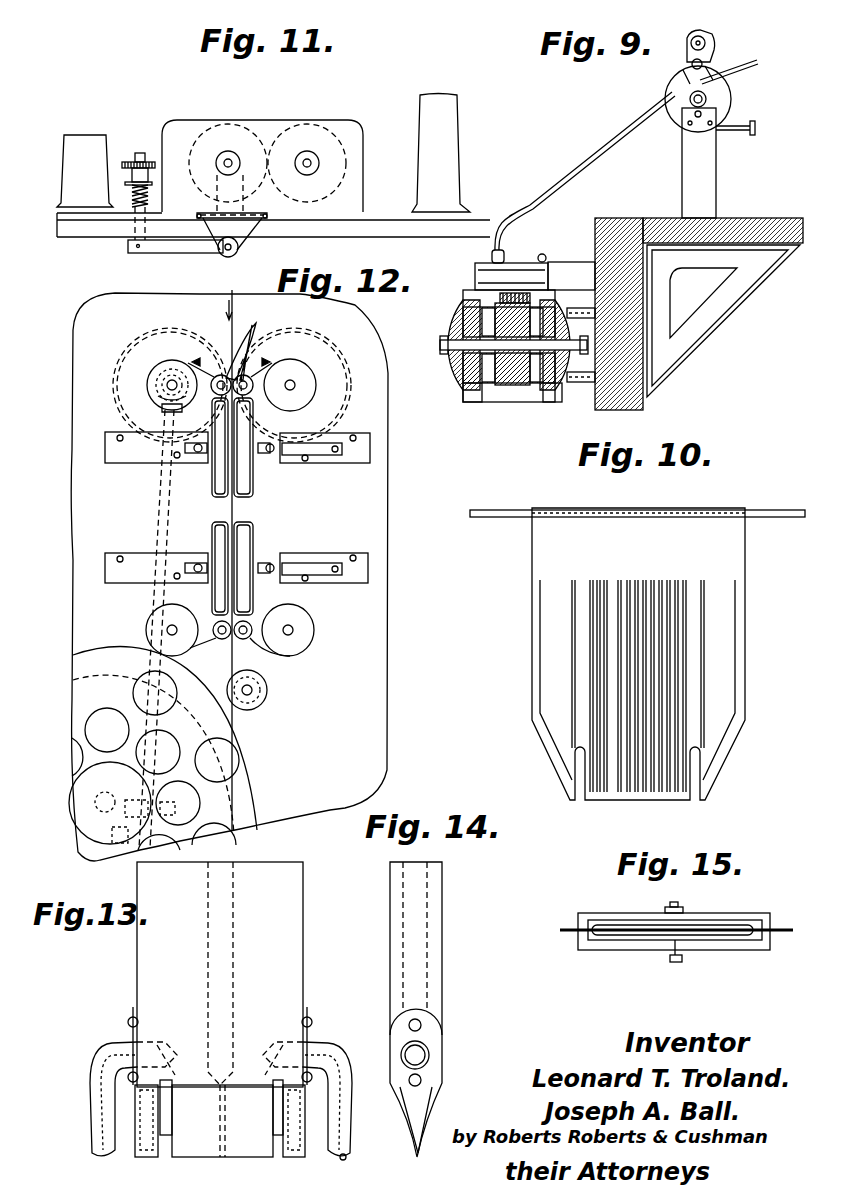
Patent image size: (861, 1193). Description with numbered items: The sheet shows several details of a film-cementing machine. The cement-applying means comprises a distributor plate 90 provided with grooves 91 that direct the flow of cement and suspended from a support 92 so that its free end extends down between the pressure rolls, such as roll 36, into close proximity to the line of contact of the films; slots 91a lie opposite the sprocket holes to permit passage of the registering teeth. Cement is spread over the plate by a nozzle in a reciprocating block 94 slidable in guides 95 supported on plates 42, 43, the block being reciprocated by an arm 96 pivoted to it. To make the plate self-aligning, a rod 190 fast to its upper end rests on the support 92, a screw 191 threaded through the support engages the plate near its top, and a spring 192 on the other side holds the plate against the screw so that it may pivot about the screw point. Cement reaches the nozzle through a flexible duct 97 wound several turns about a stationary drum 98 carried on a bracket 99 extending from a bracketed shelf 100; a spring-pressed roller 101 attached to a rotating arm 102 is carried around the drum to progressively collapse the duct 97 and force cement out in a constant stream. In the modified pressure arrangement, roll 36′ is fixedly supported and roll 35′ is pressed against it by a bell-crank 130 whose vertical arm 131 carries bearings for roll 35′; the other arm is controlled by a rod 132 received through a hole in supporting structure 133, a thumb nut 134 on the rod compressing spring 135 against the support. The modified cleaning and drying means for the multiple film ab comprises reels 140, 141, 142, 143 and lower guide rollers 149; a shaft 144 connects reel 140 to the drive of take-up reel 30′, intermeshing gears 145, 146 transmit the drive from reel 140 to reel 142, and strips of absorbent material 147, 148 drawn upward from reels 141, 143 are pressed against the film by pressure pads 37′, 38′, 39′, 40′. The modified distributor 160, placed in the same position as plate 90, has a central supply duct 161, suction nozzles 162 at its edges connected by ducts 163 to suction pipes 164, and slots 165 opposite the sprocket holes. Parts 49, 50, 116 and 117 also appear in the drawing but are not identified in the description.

In FIG. 12, the take-up reel 30′ is at (257, 797).
In FIG. 11, the pressure roll 35′ is at (238, 122).
In FIG. 11, the pressure roll 36′ is at (327, 130).
In FIG. 9, the pressure roll 36 is at (512, 385).
In FIG. 12, the pressure pad 37′ is at (217, 480).
In FIG. 12, the pressure pad 38′ is at (253, 487).
In FIG. 12, the pressure pad 39′ is at (215, 596).
In FIG. 12, the pressure pad 40′ is at (250, 547).
In FIG. 9, the plate 42 is at (462, 388).
In FIG. 9, the plate 43 is at (548, 388).
In FIG. 9, the motor shaft 49 is at (455, 330).
In FIG. 9, the terminal 50 is at (580, 312).
In FIG. 9, the distributor plate 90 is at (500, 298).
In FIG. 10, the distributor plate 90 is at (725, 564).
In FIG. 15, the distributor plate 90 is at (640, 931).
In FIG. 10, the grooves 91 is at (736, 644).
In FIG. 10, the slots 91a is at (692, 800).
In FIG. 15, the support 92 is at (646, 920).
In FIG. 9, the reciprocating block 94 is at (522, 270).
In FIG. 9, the guides 95 is at (492, 259).
In FIG. 9, the arm 96 is at (568, 258).
In FIG. 9, the flexible duct 97 is at (572, 168).
In FIG. 9, the stationary drum 98 is at (714, 74).
In FIG. 9, the bracket 99 is at (700, 170).
In FIG. 9, the bracketed shelf 100 is at (768, 212).
In FIG. 9, the spring-pressed roller 101 is at (712, 46).
In FIG. 9, the arm 102 is at (690, 64).
In FIG. 12, the arm 116 is at (267, 456).
In FIG. 12, the arm 117 is at (263, 577).
In FIG. 11, the bell-crank 130 is at (197, 253).
In FIG. 11, the vertical arm 131 is at (243, 193).
In FIG. 11, the rod 132 is at (130, 187).
In FIG. 11, the supporting structure 133 is at (60, 207).
In FIG. 11, the thumb nut 134 is at (148, 163).
In FIG. 11, the spring 135 is at (142, 197).
In FIG. 12, the reel 140 is at (160, 385).
In FIG. 12, the reel 141 is at (167, 628).
In FIG. 12, the reel 142 is at (303, 378).
In FIG. 12, the reel 143 is at (305, 634).
In FIG. 12, the shaft 144 is at (158, 523).
In FIG. 12, the gear 145 is at (127, 342).
In FIG. 12, the gear 146 is at (310, 332).
In FIG. 12, the strip of absorbent material 147 is at (210, 642).
In FIG. 12, the strip of absorbent material 148 is at (253, 650).
In FIG. 12, the guide rollers 149 is at (226, 375).
In FIG. 13, the distributor 160 is at (278, 960).
In FIG. 14, the distributor 160 is at (435, 945).
In FIG. 13, the supply duct 161 is at (233, 914).
In FIG. 13, the suction nozzles 162 is at (135, 1160).
In FIG. 13, the ducts 163 is at (302, 1068).
In FIG. 13, the suction pipes 164 is at (92, 1125).
In FIG. 13, the slots 165 is at (272, 1160).
In FIG. 10, the rod 190 is at (515, 512).
In FIG. 15, the rod 190 is at (802, 917).
In FIG. 15, the screw 191 is at (682, 958).
In FIG. 15, the spring 192 is at (686, 910).
In FIG. 12, the multiple film ab is at (266, 670).